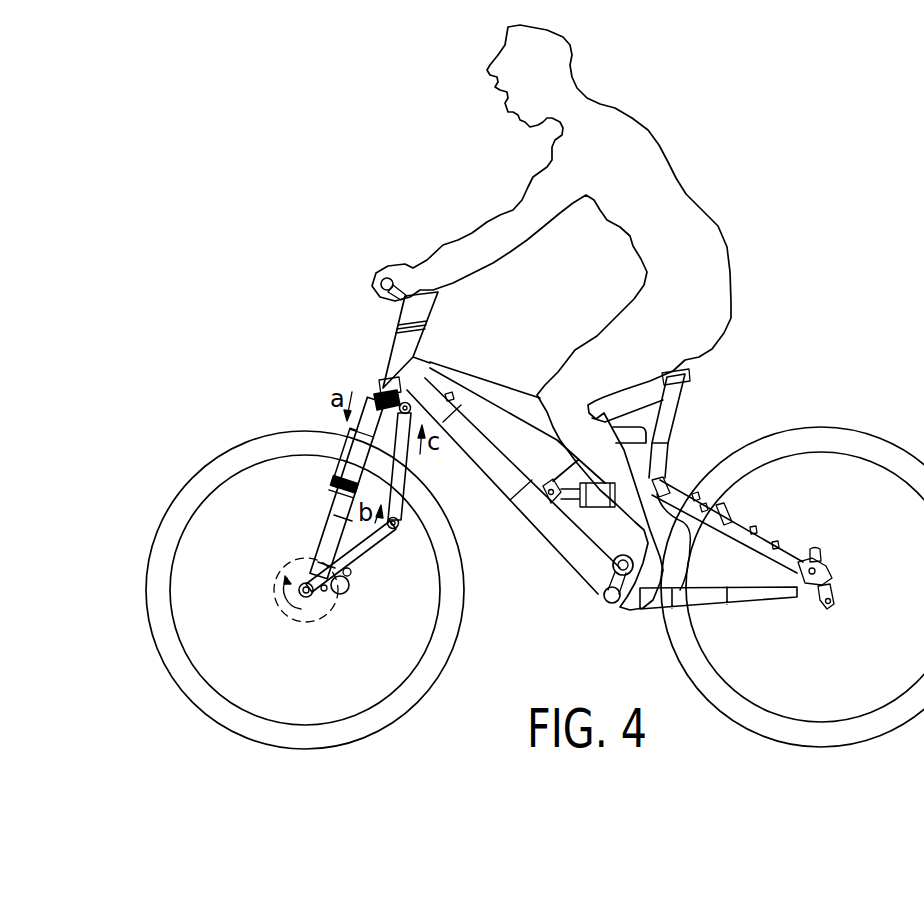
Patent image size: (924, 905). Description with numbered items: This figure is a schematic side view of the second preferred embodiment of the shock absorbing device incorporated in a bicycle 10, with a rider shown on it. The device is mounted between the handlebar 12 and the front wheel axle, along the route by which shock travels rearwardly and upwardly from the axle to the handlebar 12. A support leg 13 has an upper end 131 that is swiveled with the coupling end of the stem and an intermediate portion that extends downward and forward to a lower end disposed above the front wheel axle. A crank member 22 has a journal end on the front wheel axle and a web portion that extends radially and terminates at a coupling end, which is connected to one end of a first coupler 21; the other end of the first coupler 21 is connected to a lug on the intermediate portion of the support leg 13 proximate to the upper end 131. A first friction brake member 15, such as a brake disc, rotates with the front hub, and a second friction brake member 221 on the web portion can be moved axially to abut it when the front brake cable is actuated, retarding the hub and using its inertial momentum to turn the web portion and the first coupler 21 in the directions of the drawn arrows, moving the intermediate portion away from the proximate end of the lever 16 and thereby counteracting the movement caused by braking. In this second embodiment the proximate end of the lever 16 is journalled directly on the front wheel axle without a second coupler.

The bicycle 10 is at (776, 391).
The handlebar 12 is at (378, 281).
The support leg 13 is at (352, 437).
The upper end 131 is at (375, 397).
The lever 16 is at (330, 535).
The first friction brake member 15 is at (268, 585).
The first coupler 21 is at (410, 470).
The crank member 22 is at (353, 558).
The second friction brake member 221 is at (343, 598).